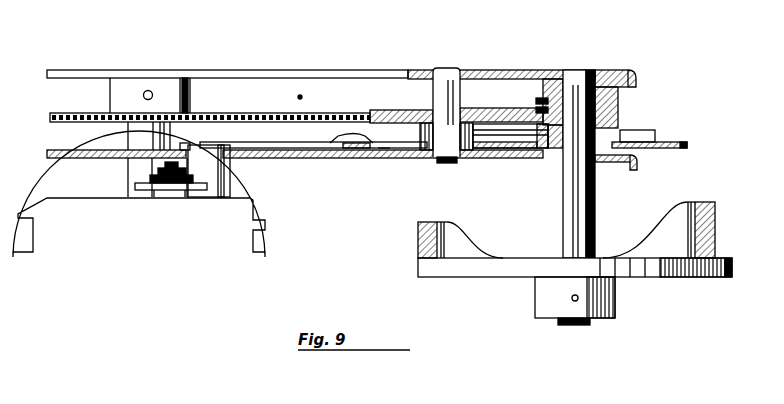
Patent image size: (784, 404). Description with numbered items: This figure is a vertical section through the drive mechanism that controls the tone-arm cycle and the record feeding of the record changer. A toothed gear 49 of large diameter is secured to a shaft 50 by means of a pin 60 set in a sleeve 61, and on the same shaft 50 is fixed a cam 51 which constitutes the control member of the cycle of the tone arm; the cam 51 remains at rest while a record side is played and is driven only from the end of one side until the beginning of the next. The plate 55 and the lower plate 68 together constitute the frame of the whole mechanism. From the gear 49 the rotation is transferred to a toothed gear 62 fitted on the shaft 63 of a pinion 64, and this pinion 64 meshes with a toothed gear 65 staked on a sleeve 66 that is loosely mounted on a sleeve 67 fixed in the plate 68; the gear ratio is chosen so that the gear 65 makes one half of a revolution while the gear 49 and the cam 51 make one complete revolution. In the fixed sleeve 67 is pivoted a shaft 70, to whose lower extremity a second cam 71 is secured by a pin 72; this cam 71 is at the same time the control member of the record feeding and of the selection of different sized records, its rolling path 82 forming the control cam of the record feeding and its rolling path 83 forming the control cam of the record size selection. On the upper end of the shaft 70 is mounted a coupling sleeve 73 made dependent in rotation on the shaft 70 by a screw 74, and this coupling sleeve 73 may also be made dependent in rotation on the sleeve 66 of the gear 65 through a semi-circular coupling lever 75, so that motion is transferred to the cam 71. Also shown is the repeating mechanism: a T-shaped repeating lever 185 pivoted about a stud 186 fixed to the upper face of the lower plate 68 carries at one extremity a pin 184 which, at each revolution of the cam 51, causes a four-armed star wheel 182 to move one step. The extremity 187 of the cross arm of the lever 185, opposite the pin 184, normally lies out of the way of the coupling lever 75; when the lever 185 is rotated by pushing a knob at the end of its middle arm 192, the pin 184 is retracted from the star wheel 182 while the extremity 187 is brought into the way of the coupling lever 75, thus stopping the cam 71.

The toothed gear 49 is at (235, 115).
The shaft 50 is at (155, 132).
The cam 51 is at (265, 278).
The plate 55 is at (223, 73).
The pin 60 is at (146, 91).
The sleeve 61 is at (118, 102).
The toothed gear 62 is at (397, 116).
The shaft 63 is at (448, 87).
The pinion 64 is at (465, 160).
The toothed gear 65 is at (680, 143).
The sleeve 66 is at (620, 120).
The sleeve 67 is at (604, 160).
The plate 68 is at (634, 164).
The shaft 70 is at (575, 97).
The second cam 71 is at (667, 267).
The pin 72 is at (587, 325).
The coupling sleeve 73 is at (552, 97).
The screw 74 is at (540, 98).
The coupling lever 75 is at (645, 136).
The rolling path 82 is at (418, 222).
The rolling path 83 is at (705, 205).
The star wheel 182 is at (137, 185).
The pin 184 is at (228, 175).
The repeating lever 185 is at (283, 146).
The stud 186 is at (350, 134).
The extremity 187 is at (513, 160).
The arm 192 is at (383, 155).